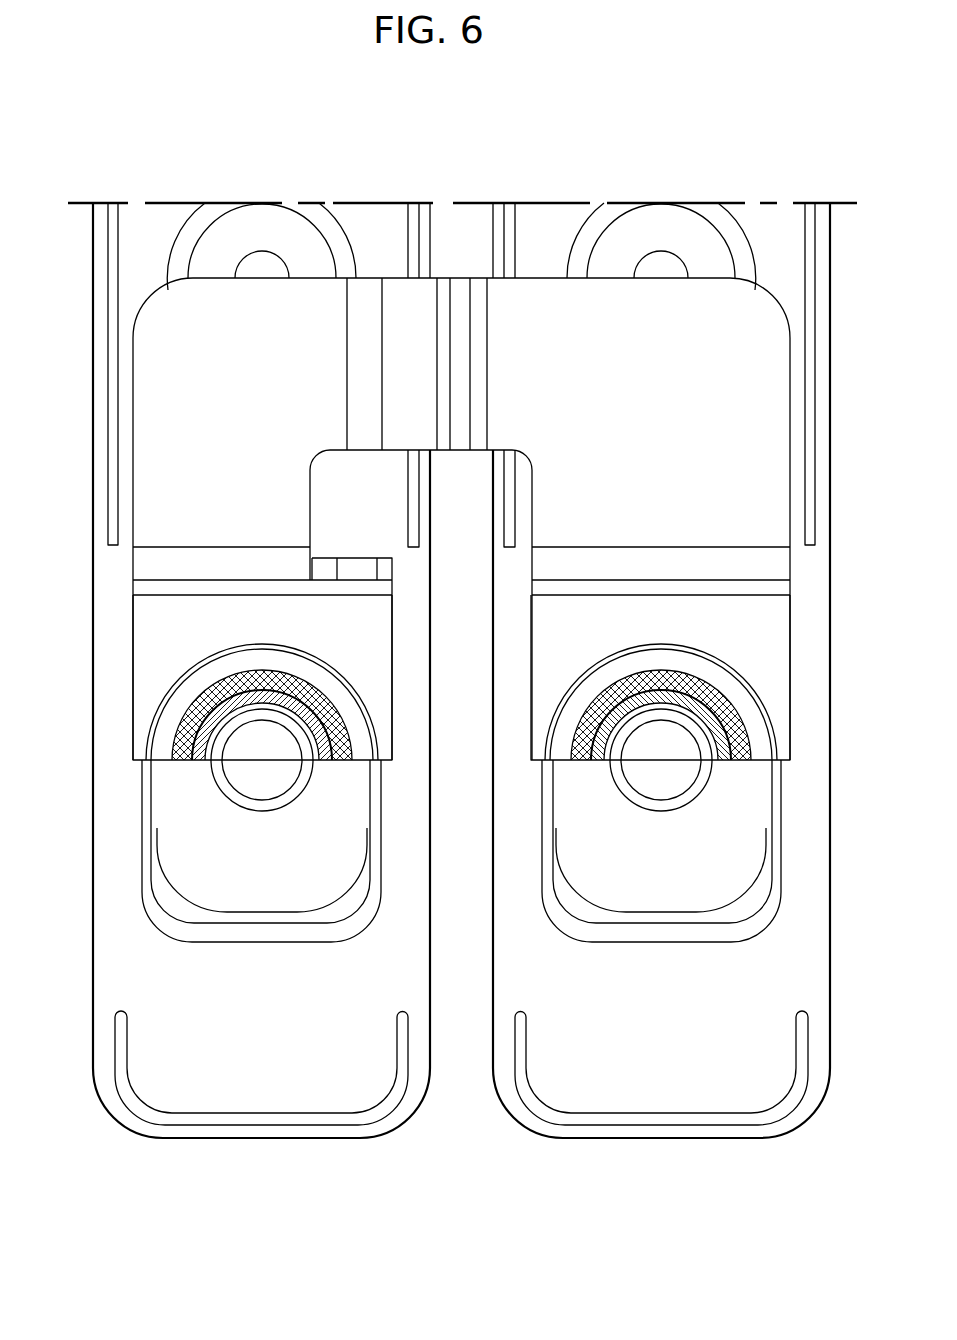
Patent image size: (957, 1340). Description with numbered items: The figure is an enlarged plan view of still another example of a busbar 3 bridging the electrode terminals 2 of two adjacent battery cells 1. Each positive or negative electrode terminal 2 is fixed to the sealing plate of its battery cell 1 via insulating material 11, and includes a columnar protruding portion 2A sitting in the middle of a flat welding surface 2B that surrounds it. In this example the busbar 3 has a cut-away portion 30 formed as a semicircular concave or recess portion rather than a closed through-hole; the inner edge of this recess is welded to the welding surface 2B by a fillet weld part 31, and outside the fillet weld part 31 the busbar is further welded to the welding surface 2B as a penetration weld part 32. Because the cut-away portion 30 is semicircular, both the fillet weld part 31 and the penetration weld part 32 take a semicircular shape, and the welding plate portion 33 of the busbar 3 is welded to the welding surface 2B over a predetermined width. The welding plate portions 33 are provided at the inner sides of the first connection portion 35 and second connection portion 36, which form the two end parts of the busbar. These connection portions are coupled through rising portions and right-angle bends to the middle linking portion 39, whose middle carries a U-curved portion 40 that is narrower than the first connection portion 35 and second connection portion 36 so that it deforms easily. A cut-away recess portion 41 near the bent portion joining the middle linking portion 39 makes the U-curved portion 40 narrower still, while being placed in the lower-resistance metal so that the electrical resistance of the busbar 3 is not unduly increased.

The battery cell 1 is at (253, 1133).
The insulating material 11 is at (180, 917).
The electrode terminal 2 is at (370, 1005).
The protruding portion 2A is at (227, 800).
The welding surface 2B is at (305, 865).
The busbar 3 is at (370, 243).
The cut-away portion 30 is at (305, 687).
The fillet weld part 31 is at (250, 687).
The penetration weld part 32 is at (212, 683).
The welding plate portion 33 is at (280, 660).
The first connection portion 35 is at (188, 613).
The second connection portion 36 is at (727, 612).
The middle linking portion 39 is at (224, 337).
The U-curved portion 40 is at (448, 282).
The cut-away recess portion 41 is at (358, 493).